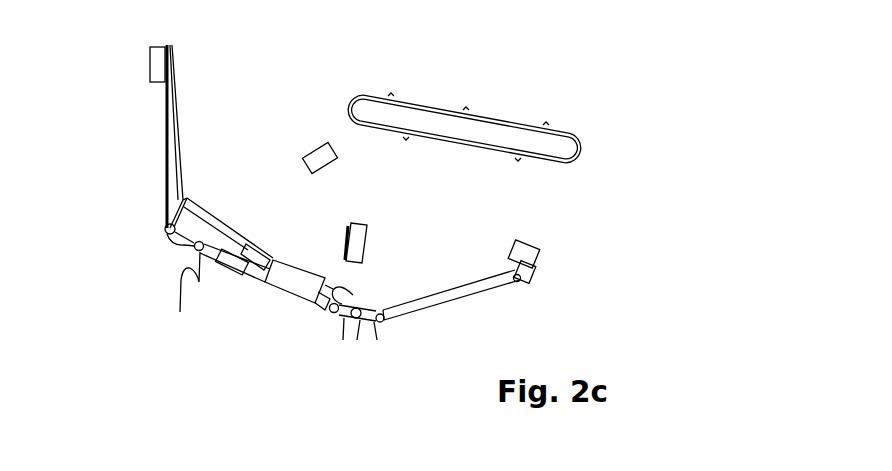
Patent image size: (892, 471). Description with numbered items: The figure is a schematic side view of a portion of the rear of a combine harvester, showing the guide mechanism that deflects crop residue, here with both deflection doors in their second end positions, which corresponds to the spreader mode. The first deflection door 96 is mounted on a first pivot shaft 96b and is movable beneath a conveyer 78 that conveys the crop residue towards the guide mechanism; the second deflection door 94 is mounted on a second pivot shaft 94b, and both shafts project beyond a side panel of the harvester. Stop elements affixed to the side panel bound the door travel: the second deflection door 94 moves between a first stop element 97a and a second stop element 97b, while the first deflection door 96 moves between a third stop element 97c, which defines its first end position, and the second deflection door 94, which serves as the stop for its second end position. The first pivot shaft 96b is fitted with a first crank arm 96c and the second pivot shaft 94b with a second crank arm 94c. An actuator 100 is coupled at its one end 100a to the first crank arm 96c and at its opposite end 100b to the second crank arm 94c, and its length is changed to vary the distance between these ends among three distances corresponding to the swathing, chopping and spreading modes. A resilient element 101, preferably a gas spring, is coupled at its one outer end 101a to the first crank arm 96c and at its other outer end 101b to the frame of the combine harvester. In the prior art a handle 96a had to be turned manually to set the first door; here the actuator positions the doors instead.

The conveyer 78 is at (422, 102).
The second deflection door 94 is at (172, 115).
The second pivot shaft 94b is at (165, 229).
The second crank arm 94c is at (180, 247).
The first deflection door 96 is at (223, 228).
The handle 96a is at (265, 250).
The first pivot shaft 96b is at (328, 310).
The first crank arm 96c is at (338, 316).
The first stop element 97a is at (315, 155).
The second stop element 97b is at (157, 55).
The third stop element 97c is at (367, 226).
The actuator 100 is at (293, 285).
The one end of the actuator 100a is at (353, 295).
The opposite end of the actuator 100b is at (181, 292).
The resilient element 101 is at (478, 292).
The one outer end of the resilient element 101a is at (378, 322).
The other outer end of the resilient element 101b is at (526, 290).